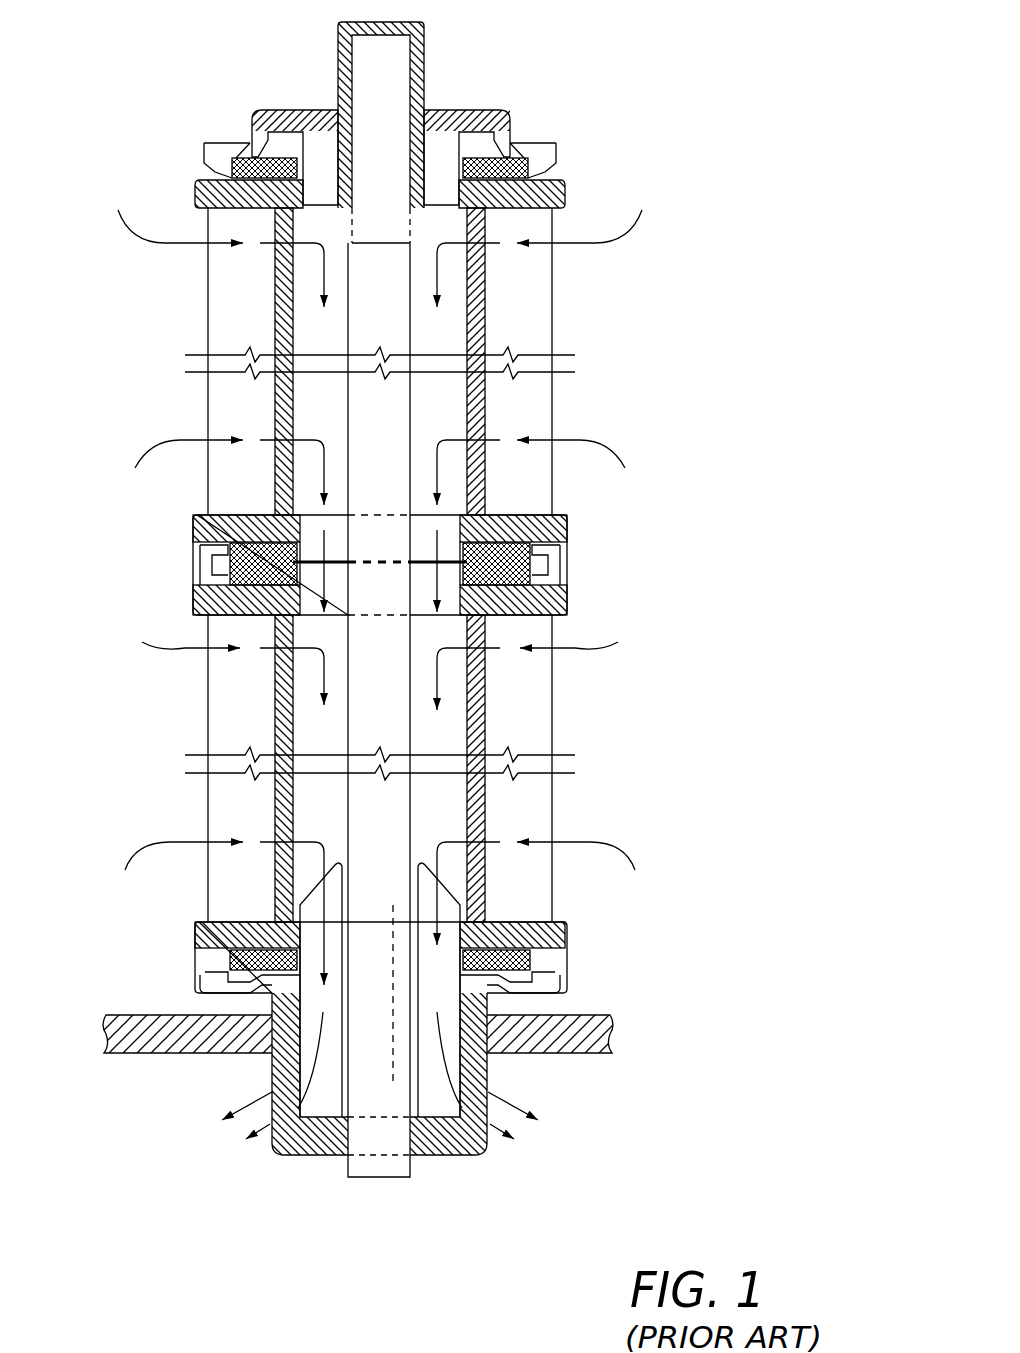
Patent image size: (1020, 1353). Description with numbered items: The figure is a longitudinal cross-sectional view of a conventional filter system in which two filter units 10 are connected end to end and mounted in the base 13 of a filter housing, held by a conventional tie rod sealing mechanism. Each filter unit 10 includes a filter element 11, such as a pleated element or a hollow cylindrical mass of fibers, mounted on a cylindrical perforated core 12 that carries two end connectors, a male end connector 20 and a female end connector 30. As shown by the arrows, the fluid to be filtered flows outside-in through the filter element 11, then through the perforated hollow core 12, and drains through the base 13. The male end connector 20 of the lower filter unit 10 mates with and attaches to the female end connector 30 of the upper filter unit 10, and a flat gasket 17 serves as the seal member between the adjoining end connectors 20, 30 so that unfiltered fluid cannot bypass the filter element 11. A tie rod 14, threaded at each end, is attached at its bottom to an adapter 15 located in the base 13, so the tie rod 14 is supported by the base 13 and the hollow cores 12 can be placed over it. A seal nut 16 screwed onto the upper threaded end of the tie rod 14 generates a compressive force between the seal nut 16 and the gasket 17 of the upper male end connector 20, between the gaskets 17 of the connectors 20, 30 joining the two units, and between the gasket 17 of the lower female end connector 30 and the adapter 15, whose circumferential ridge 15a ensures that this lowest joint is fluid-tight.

The filter unit 10 is at (208, 318).
The filter element 11 is at (512, 290).
The cylindrical perforated core 12 is at (490, 266).
The base 13 is at (580, 1057).
The tie rod 14 is at (410, 415).
The adapter 15 is at (272, 1073).
The circumferential ridge 15a is at (245, 980).
The seal nut 16 is at (507, 125).
The flat gasket 17 is at (243, 147).
The male end connector 20 is at (565, 198).
The female end connector 30 is at (565, 533).